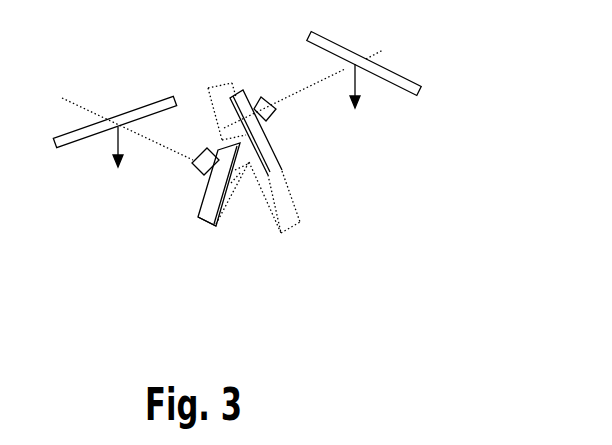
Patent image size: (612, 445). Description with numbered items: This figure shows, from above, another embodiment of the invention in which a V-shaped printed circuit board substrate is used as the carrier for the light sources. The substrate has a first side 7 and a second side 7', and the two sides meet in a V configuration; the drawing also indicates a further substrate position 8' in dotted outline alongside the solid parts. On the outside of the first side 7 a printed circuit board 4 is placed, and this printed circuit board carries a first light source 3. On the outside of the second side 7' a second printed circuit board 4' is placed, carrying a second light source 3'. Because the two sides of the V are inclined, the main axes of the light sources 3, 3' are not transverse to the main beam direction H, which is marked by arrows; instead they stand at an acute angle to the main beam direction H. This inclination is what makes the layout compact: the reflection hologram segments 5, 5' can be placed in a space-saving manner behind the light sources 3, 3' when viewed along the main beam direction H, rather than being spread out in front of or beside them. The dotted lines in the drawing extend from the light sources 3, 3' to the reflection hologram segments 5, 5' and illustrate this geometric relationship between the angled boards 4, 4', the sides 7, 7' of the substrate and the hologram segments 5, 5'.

The first light source 3 is at (190, 175).
The second light source 3' is at (288, 121).
The printed circuit board 4 is at (278, 143).
The second printed circuit board 4' is at (199, 197).
The reflection hologram segment 5 is at (106, 119).
The reflection hologram segment 5' is at (377, 64).
The first side 7 is at (223, 249).
The second side 7' is at (302, 206).
The arm position (ghost) 8' is at (209, 85).
The main beam direction H is at (118, 140).